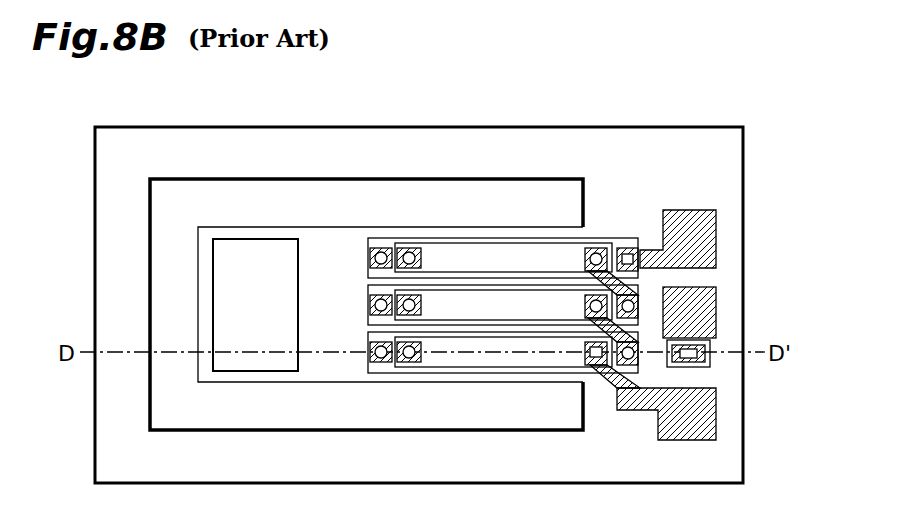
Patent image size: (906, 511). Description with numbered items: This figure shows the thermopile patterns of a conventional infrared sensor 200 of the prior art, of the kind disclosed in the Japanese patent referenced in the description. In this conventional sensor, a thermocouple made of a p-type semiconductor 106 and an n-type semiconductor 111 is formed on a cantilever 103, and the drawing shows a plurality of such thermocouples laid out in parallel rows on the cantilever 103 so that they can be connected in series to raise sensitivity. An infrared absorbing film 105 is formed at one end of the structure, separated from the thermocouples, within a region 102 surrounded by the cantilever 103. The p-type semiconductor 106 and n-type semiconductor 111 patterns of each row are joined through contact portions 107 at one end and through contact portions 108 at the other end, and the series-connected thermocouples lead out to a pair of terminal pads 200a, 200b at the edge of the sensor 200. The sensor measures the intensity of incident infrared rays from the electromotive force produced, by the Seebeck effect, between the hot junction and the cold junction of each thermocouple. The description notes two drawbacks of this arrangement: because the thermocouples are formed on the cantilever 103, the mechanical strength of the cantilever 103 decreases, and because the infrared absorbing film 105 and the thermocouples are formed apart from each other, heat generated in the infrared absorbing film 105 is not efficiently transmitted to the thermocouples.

The piezoelectric/MEMS device (prior art) 200 is at (455, 224).
The cavity / diaphragm region 102 is at (330, 243).
The cantilever 103 is at (303, 383).
The infrared absorbing film 105 is at (255, 253).
The p-type semiconductor 106 is at (488, 328).
The contact pads 107 is at (367, 353).
The terminal contact 108 is at (713, 360).
The n-type semiconductor 111 is at (527, 262).
The first terminal pad 200a is at (716, 232).
The second terminal pad 200b is at (716, 435).